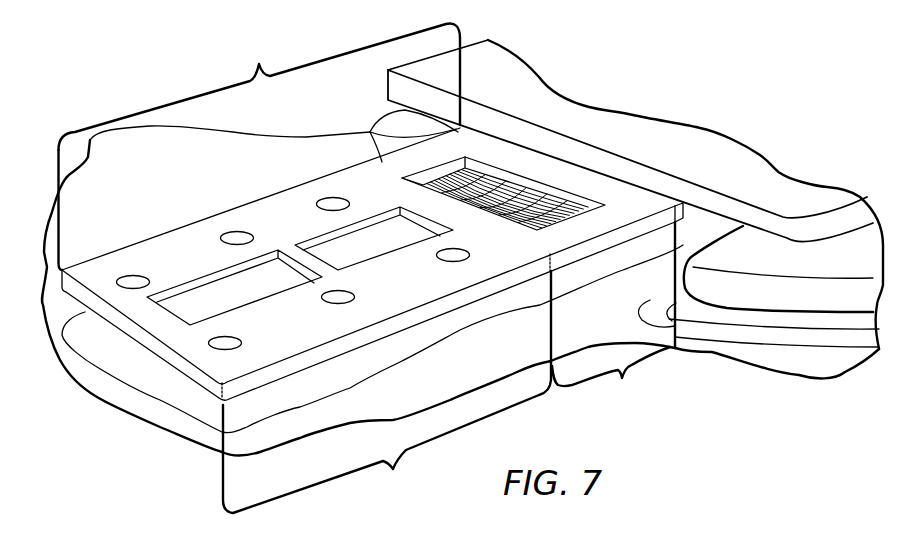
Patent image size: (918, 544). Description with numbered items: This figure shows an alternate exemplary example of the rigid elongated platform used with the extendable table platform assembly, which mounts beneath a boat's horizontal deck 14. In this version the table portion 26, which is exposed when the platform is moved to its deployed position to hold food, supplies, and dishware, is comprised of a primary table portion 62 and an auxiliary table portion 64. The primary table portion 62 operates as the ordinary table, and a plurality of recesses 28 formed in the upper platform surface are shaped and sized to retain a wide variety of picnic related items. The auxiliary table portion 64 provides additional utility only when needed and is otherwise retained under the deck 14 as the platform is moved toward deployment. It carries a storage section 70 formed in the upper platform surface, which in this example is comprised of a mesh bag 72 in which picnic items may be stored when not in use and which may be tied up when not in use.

The horizontal deck 14 is at (506, 88).
The table portion 26 is at (462, 240).
The recesses 28 is at (322, 200).
The primary table portion 62 is at (449, 367).
The auxiliary table portion 64 is at (470, 329).
The storage section 70 is at (561, 186).
The mesh bag 72 is at (557, 215).